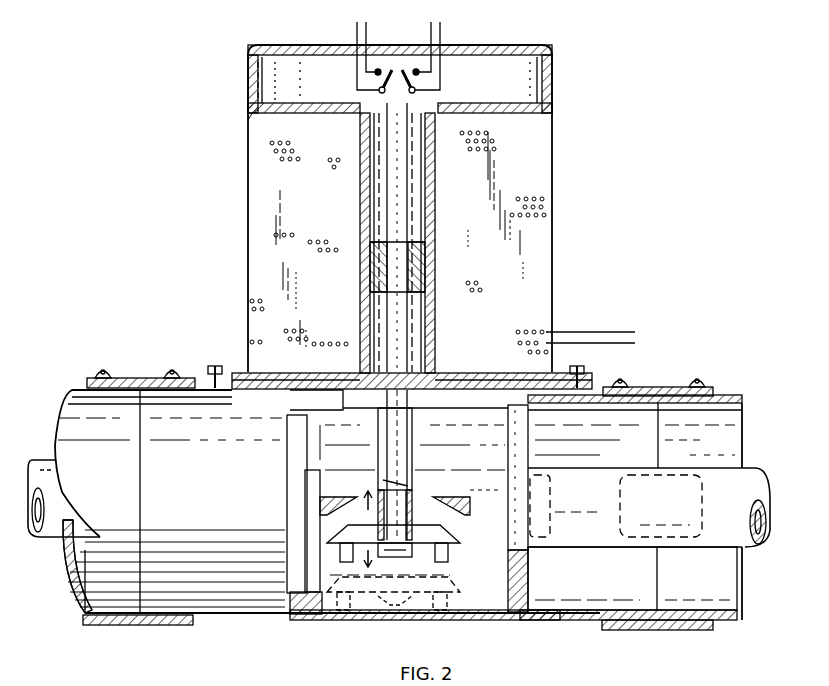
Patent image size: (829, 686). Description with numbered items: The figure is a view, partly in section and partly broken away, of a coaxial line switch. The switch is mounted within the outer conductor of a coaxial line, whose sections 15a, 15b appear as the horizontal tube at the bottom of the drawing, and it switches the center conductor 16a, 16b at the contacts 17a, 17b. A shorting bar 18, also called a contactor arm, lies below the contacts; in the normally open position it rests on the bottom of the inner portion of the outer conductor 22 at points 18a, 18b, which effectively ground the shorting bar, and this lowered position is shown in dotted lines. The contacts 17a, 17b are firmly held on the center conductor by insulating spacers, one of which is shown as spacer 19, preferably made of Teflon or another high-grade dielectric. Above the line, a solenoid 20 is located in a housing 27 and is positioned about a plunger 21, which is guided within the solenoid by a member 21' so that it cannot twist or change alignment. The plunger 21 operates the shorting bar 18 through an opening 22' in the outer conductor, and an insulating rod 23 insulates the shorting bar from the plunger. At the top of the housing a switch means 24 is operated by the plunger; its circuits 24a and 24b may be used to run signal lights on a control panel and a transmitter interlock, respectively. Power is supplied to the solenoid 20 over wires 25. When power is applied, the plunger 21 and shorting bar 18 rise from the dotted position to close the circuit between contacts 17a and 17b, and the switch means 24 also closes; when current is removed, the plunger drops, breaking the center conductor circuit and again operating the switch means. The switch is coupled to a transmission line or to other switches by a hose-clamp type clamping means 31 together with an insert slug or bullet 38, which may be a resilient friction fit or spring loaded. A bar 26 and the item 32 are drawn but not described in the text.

The outer conductor section 15a is at (60, 412).
The outer conductor section 15b is at (727, 395).
The center conductor 16a is at (52, 548).
The center conductor 16b is at (752, 548).
The contact 17a is at (336, 503).
The contact 17b is at (455, 505).
The shorting bar 18 is at (462, 543).
The grounding point 18a is at (380, 612).
The grounding point 18b is at (468, 612).
The insulating spacer 19 is at (530, 574).
The solenoid 20 is at (528, 156).
The plunger 21 is at (419, 237).
The guide member 21' is at (421, 267).
The outer conductor inner portion bottom 22 is at (165, 632).
The opening 22' is at (400, 251).
The insulating rod 23 is at (398, 452).
The switch means 24 is at (392, 65).
The circuit 24a is at (357, 22).
The circuit 24b is at (450, 22).
The wires 25 is at (610, 327).
The partition bar 26 is at (293, 502).
The housing 27 is at (252, 112).
The clamping means 31 is at (133, 378).
The bracket 32 is at (180, 682).
The insert slug 38 is at (708, 502).